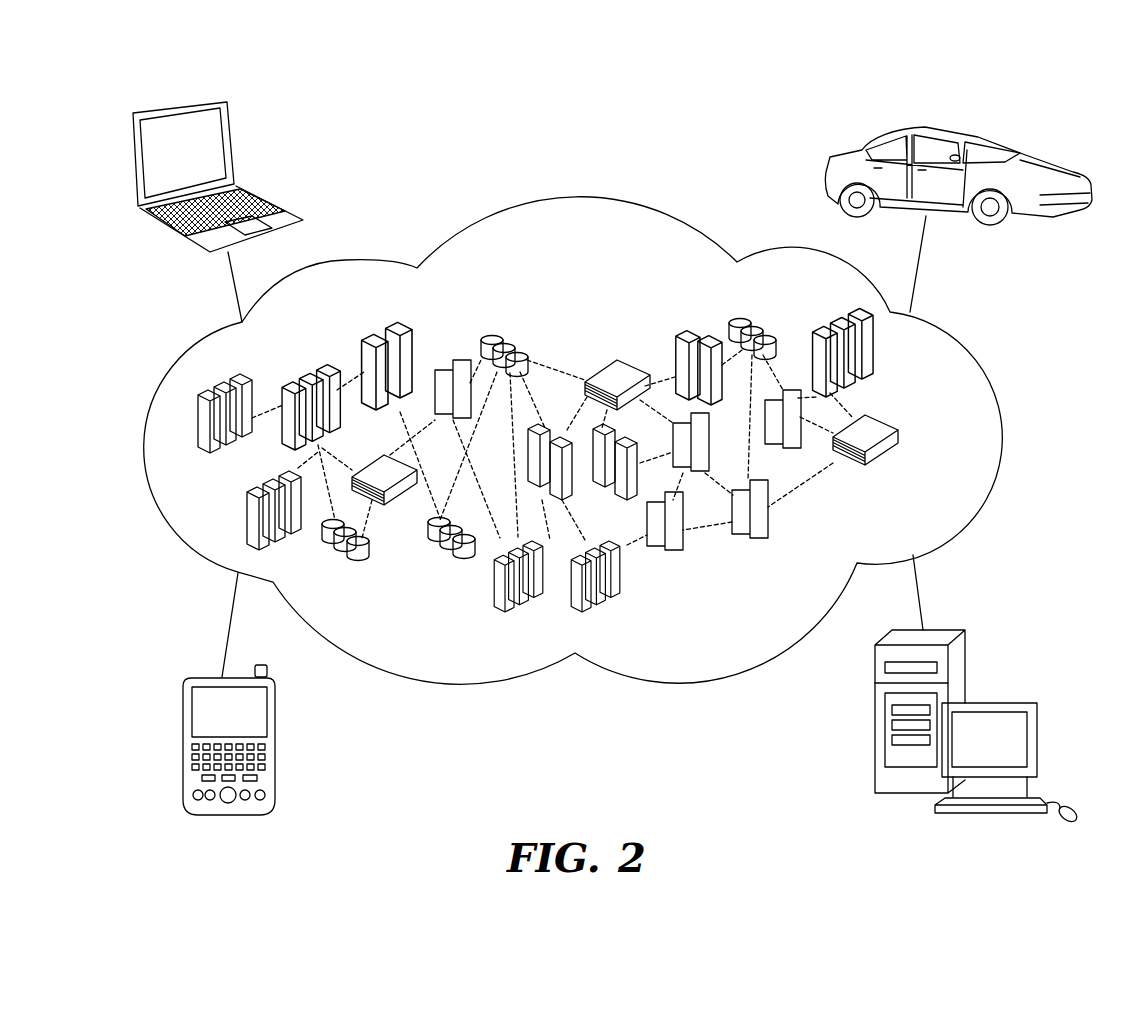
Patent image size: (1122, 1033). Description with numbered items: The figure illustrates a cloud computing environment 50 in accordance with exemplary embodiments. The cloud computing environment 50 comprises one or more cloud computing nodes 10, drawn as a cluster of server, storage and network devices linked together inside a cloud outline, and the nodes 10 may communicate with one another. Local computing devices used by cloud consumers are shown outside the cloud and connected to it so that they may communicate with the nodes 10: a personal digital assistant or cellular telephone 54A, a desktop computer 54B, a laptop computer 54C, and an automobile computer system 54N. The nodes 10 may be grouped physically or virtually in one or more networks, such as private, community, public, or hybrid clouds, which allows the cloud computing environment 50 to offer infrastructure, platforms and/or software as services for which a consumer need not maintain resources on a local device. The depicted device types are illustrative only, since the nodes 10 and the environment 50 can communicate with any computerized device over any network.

The cloud computing node 10 is at (478, 276).
The cloud computing environment 50 is at (581, 205).
The personal digital assistant (PDA) or cellular telephone 54A is at (263, 712).
The desktop computer 54B is at (1008, 704).
The laptop computer 54C is at (223, 157).
The automobile computer system 54N is at (830, 160).